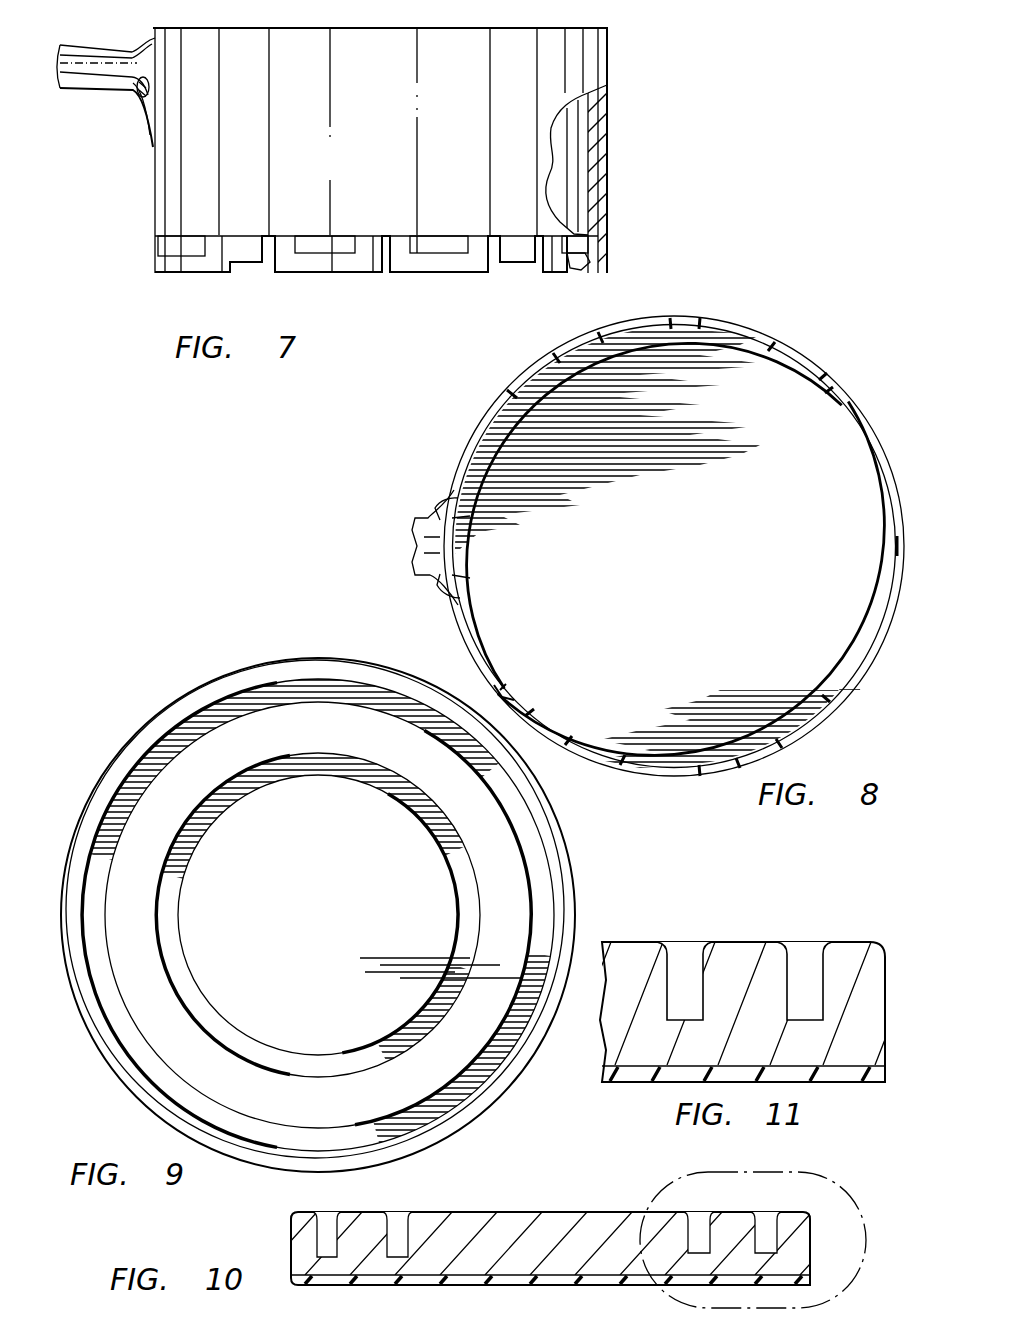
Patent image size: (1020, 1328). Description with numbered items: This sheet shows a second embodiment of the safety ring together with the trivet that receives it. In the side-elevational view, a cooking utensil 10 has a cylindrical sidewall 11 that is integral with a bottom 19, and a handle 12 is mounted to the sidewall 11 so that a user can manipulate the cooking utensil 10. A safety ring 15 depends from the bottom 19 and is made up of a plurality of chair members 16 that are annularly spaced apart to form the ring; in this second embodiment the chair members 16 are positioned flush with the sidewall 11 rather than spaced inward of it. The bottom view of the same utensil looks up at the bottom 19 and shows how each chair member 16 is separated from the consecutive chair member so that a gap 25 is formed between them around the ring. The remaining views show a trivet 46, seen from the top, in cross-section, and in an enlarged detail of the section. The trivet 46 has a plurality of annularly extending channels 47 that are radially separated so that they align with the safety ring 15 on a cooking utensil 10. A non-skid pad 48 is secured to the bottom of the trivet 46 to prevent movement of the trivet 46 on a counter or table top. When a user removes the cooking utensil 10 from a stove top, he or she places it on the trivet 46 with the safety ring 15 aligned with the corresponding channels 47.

In FIG. 7, the cooking utensil 10 is at (428, 164).
In FIG. 7, the cylindrical sidewall 11 is at (607, 65).
In FIG. 10, the cylindrical sidewall 11 is at (838, 1180).
In FIG. 7, the handle 12 is at (109, 82).
In FIG. 7, the safety ring 15 is at (365, 278).
In FIG. 7, the chair members 16 is at (437, 263).
In FIG. 8, the chair members 16 is at (757, 333).
In FIG. 8, the bottom 19 is at (685, 517).
In FIG. 8, the gap 25 is at (892, 543).
In FIG. 9, the trivet 46 is at (510, 928).
In FIG. 9, the annularly extending channels 47 is at (540, 917).
In FIG. 11, the annularly extending channels 47 is at (805, 960).
In FIG. 11, the non-skid pad 48 is at (845, 1073).